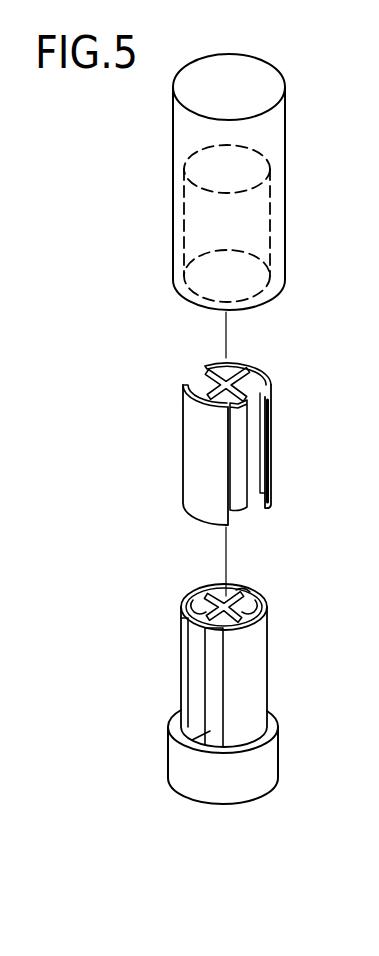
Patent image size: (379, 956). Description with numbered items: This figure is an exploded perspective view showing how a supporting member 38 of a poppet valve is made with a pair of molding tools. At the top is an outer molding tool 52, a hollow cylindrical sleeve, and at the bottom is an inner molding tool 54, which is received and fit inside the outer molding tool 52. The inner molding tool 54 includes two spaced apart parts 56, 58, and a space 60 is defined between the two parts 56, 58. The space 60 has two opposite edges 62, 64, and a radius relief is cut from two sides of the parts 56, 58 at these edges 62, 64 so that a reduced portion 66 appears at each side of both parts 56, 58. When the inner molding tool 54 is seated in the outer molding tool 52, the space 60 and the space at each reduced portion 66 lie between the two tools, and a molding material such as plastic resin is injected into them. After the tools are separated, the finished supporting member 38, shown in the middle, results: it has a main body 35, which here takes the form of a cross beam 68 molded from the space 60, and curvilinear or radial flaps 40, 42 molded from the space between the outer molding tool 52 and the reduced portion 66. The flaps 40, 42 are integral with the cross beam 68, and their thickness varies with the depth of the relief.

The outer molding tool 52 is at (288, 223).
The main body 35 is at (213, 382).
The supporting member 38 is at (280, 411).
The flap 40 is at (193, 452).
The flap 42 is at (273, 478).
The cross beam 68 is at (217, 380).
The inner molding tool 54 is at (275, 685).
The part 56 is at (190, 602).
The part 58 is at (253, 612).
The space 60 is at (217, 600).
The edge 62 is at (200, 630).
The edge 64 is at (247, 593).
The reduced portion 66 is at (227, 597).